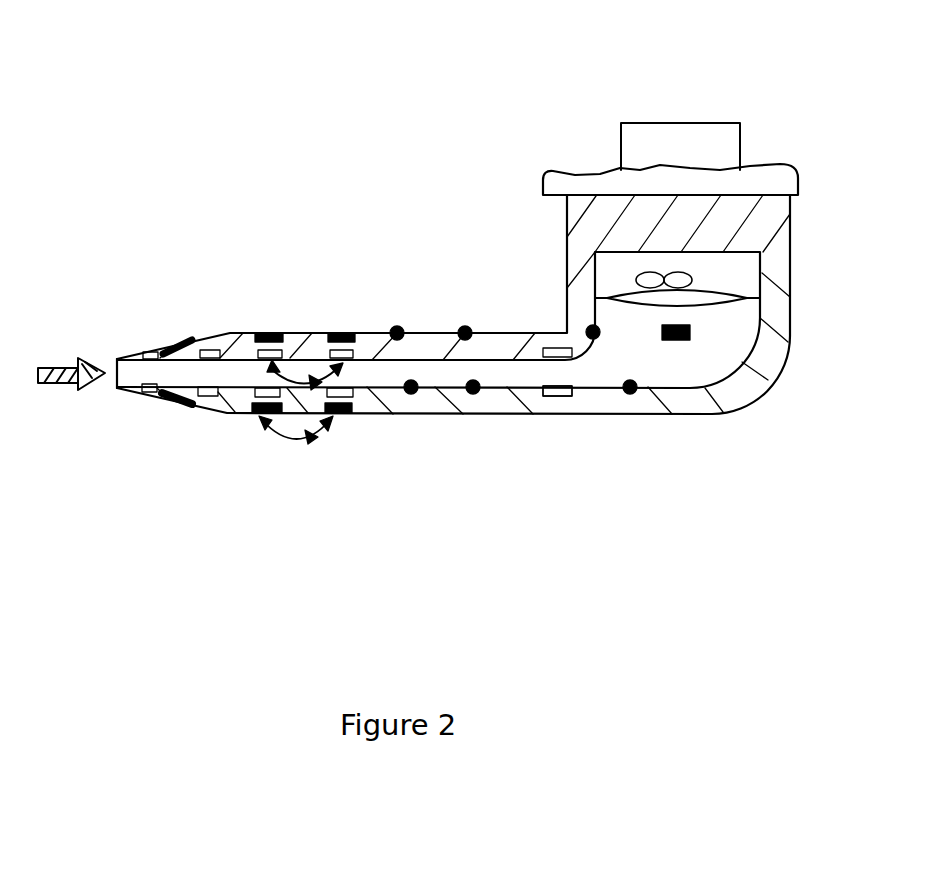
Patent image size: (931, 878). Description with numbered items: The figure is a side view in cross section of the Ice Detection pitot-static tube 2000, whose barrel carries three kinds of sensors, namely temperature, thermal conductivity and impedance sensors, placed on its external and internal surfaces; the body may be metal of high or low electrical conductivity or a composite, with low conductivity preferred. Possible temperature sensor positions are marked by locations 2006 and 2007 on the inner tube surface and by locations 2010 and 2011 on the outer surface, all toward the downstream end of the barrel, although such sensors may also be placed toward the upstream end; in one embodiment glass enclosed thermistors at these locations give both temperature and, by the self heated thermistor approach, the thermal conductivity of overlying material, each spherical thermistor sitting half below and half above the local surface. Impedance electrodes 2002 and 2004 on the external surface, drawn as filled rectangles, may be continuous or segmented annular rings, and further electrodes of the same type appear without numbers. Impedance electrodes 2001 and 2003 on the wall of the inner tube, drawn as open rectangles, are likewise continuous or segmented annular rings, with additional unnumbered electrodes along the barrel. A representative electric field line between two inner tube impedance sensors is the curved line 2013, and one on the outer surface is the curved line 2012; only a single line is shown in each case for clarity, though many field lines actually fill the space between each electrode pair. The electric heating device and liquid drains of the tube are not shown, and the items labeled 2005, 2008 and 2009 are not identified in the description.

The Ice Detection pitot-static tube 2000 is at (318, 82).
The impedance electrode 2001 is at (153, 340).
The impedance electrode 2002 is at (182, 340).
The impedance electrode 2003 is at (210, 337).
The impedance electrode 2004 is at (268, 333).
The heater element 2005 is at (238, 402).
The temperature sensor location 2006 is at (411, 394).
The temperature sensor location 2007 is at (473, 394).
The sensor element 2008 is at (562, 397).
The connector block 2009 is at (615, 142).
The temperature sensor location 2010 is at (474, 320).
The temperature sensor location 2011 is at (400, 312).
The curved line 2012 is at (278, 437).
The curved line 2013 is at (290, 373).